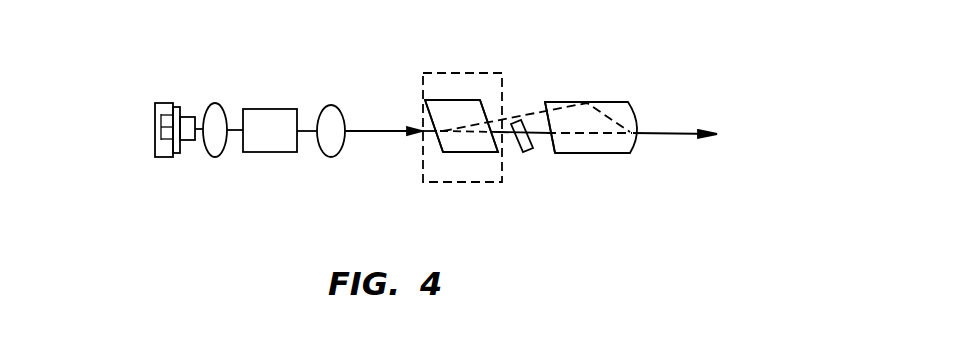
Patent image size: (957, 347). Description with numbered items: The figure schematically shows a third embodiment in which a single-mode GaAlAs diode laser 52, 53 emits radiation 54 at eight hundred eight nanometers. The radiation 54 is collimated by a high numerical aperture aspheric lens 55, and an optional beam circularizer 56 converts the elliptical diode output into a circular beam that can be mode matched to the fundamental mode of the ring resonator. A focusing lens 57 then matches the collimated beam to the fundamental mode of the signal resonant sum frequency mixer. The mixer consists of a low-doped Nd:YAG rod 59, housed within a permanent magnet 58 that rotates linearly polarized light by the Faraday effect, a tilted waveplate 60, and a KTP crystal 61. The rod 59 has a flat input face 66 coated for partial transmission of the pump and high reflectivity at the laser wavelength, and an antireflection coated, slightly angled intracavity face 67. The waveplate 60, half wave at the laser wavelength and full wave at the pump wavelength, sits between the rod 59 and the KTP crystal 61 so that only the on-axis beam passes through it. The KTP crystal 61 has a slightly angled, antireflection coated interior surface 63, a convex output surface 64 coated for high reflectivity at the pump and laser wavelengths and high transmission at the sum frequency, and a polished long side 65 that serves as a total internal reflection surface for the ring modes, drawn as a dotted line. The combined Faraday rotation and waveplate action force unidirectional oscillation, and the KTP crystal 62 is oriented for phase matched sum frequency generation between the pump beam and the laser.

The GaAlAs diode laser 52 is at (155, 118).
The GaAlAs diode laser 53 is at (188, 117).
The radiation 54 is at (200, 131).
The aspheric lens 55 is at (220, 156).
The beam circularizer 56 is at (268, 109).
The focusing lens 57 is at (333, 105).
The permanent magnet 58 is at (463, 73).
The Nd:YAG rod 59 is at (482, 112).
The tilted waveplate 60 is at (523, 151).
The KTP crystal 61 is at (608, 153).
The KTP crystal 62 is at (677, 134).
The interior surface 63 is at (552, 150).
The convex output surface 64 is at (630, 153).
The side 65 is at (587, 102).
The input face 66 is at (450, 143).
The intracavity face 67 is at (495, 157).